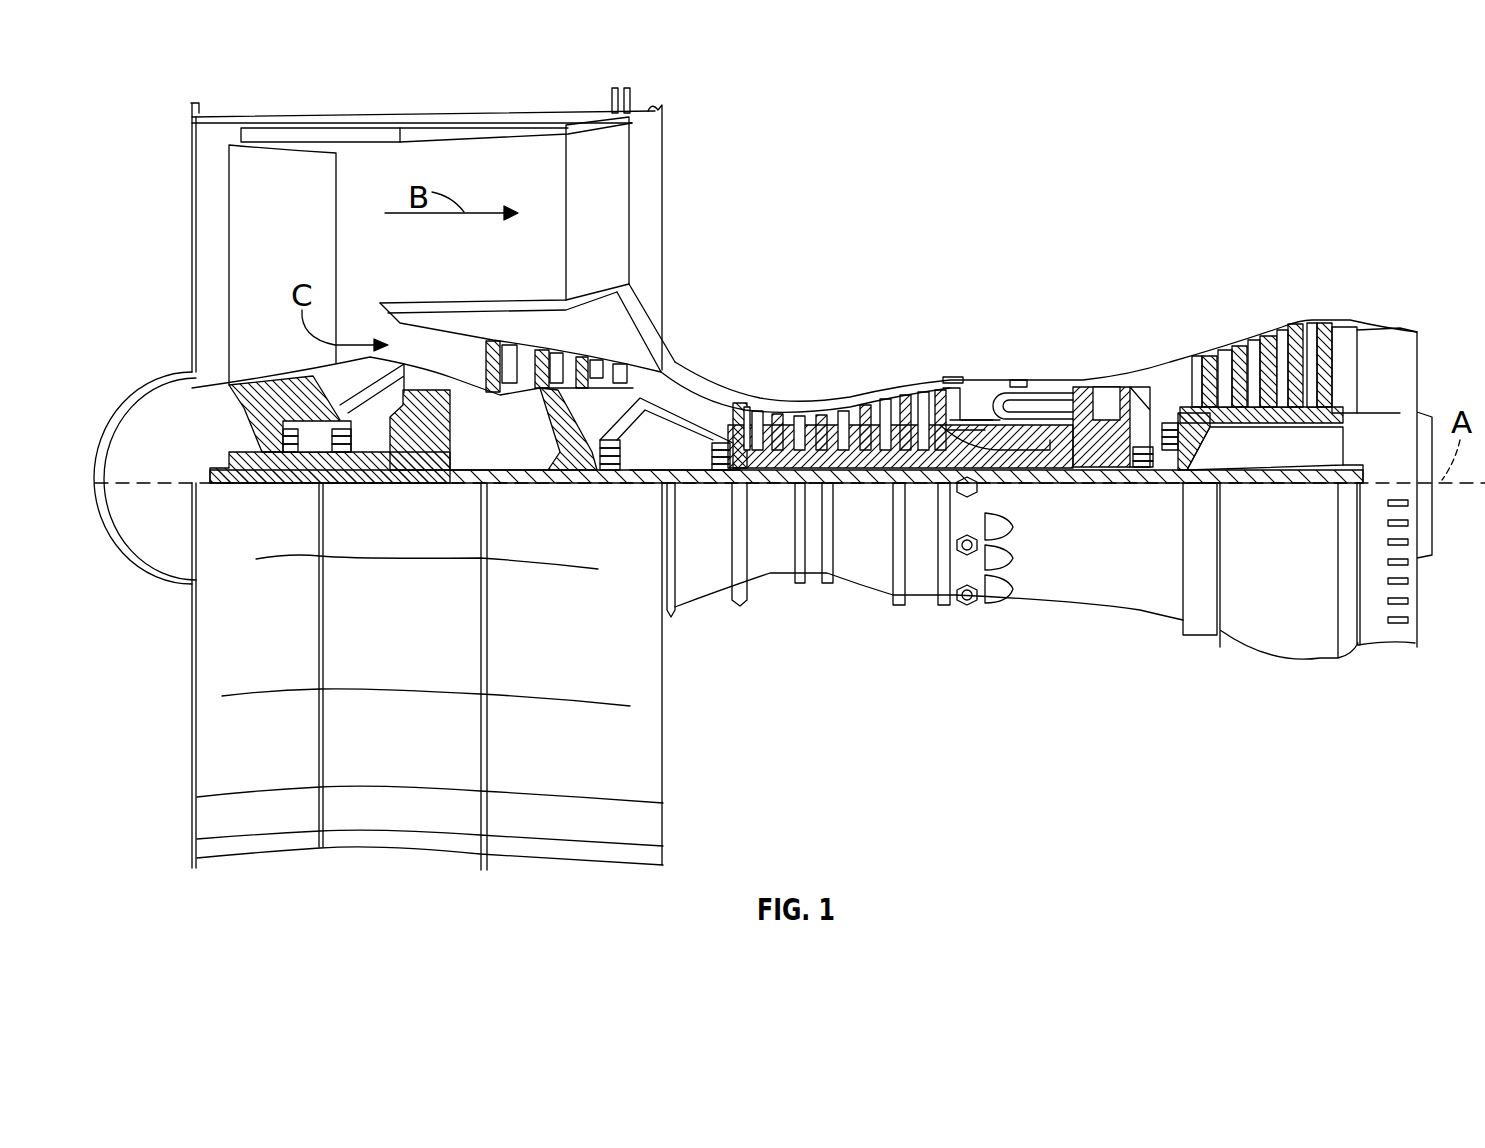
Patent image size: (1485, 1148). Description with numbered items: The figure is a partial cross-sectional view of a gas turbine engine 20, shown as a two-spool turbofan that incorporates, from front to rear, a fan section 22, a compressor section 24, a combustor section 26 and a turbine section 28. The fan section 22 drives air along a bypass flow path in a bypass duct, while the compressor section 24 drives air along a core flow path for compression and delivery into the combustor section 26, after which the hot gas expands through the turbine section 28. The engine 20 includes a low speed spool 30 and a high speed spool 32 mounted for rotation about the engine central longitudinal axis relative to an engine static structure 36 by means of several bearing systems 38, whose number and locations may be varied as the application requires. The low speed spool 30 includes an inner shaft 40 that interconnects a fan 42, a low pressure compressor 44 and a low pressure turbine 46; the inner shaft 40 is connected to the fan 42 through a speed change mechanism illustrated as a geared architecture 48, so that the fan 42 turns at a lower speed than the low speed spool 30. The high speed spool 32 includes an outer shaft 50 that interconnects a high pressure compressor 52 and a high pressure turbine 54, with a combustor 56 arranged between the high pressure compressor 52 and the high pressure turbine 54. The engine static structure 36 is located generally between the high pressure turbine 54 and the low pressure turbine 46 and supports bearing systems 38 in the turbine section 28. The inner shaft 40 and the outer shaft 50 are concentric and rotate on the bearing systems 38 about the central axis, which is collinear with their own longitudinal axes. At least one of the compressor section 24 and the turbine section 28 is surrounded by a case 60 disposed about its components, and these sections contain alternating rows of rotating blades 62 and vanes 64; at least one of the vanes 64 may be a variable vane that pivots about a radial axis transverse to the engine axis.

The gas turbine engine 20 is at (1241, 150).
The fan section 22 is at (306, 112).
The compressor section 24 is at (857, 336).
The combustor section 26 is at (1019, 340).
The turbine section 28 is at (1151, 302).
The low speed spool 30 is at (878, 487).
The high speed spool 32 is at (960, 420).
The engine static structure 36 is at (916, 601).
The bearing systems 38 is at (290, 455).
The inner shaft 40 is at (678, 488).
The fan 42 is at (309, 237).
The low pressure compressor 44 is at (583, 360).
The low pressure turbine 46 is at (1270, 342).
The geared architecture 48 is at (430, 458).
The outer shaft 50 is at (1043, 460).
The high pressure compressor 52 is at (843, 447).
The high pressure turbine 54 is at (1105, 385).
The combustor 56 is at (1032, 403).
The case 60 is at (720, 390).
The rotating blades 62 is at (730, 410).
The vanes 64 is at (748, 407).